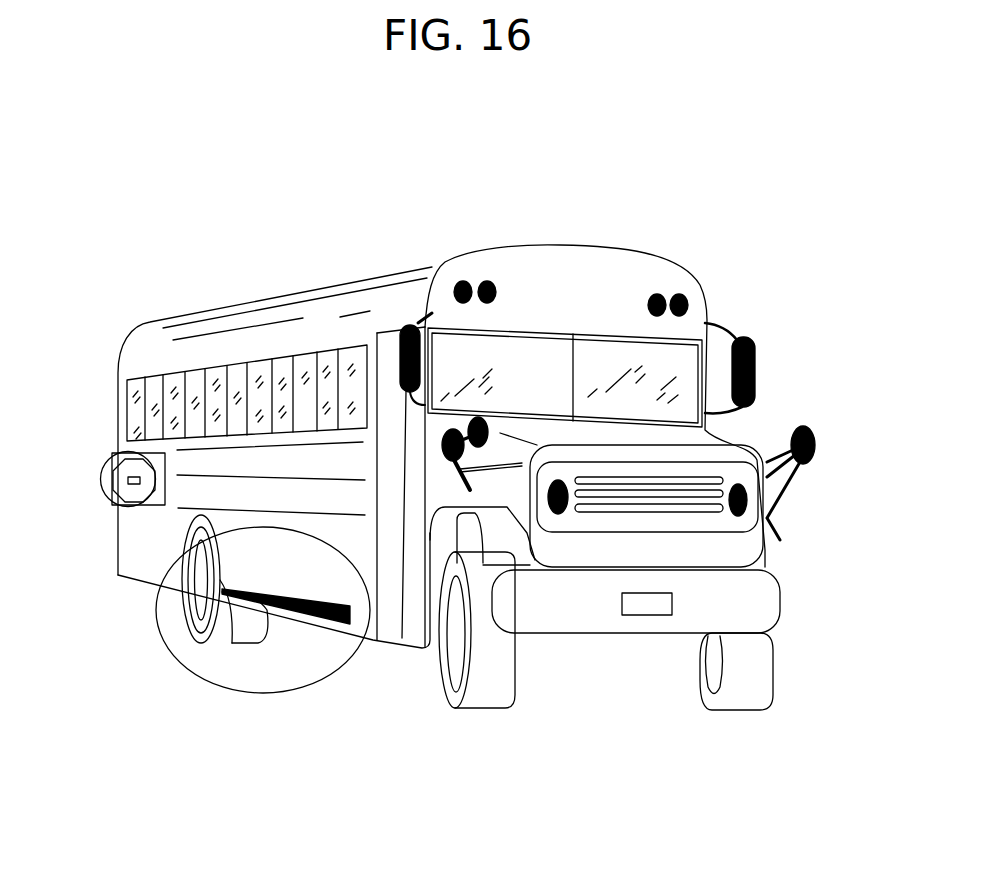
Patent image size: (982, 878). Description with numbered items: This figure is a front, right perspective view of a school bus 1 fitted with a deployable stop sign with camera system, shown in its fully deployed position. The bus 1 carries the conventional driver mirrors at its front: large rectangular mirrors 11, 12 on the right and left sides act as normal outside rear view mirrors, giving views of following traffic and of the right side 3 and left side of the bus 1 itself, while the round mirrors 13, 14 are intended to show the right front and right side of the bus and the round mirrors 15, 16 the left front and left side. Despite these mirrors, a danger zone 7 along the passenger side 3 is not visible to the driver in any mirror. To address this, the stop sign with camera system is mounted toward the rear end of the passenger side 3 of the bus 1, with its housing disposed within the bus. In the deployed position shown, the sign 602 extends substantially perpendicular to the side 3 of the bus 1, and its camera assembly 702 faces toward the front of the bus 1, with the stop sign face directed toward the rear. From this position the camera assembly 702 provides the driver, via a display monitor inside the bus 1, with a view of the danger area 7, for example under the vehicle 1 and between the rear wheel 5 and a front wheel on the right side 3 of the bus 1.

The bus 1 is at (643, 268).
The right side 3 is at (303, 428).
The rear wheel 5 is at (224, 573).
The danger zone 7 is at (306, 696).
The large rectangular mirror 11 is at (423, 353).
The large rectangular mirror 12 is at (757, 356).
The round mirror 13 is at (487, 420).
The round mirror 14 is at (467, 465).
The round mirror 15 is at (817, 437).
The round mirror 16 is at (810, 462).
The sign 602 is at (107, 492).
The camera assembly 702 is at (120, 475).